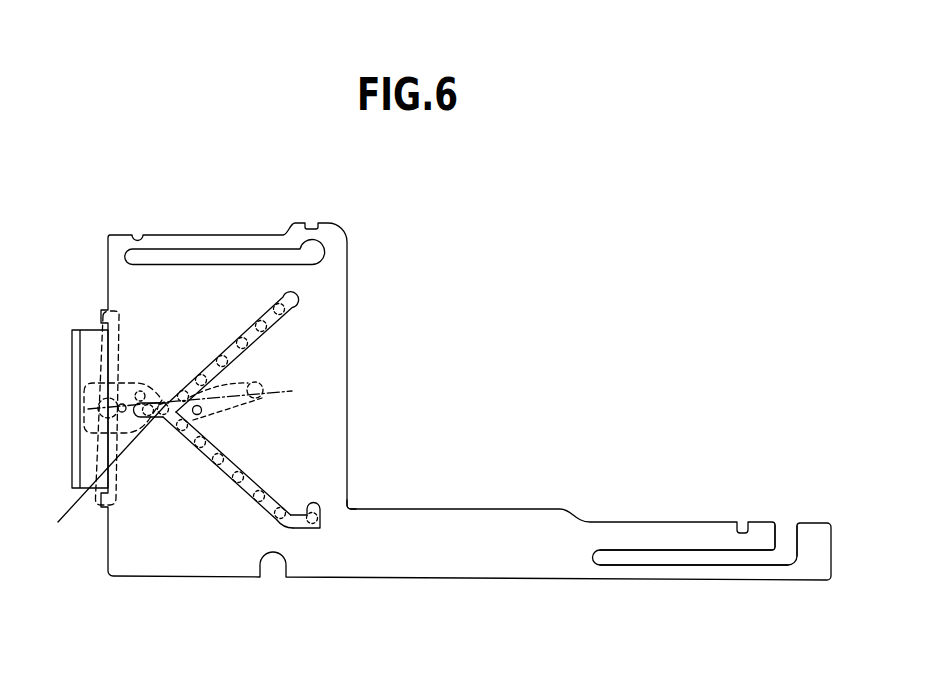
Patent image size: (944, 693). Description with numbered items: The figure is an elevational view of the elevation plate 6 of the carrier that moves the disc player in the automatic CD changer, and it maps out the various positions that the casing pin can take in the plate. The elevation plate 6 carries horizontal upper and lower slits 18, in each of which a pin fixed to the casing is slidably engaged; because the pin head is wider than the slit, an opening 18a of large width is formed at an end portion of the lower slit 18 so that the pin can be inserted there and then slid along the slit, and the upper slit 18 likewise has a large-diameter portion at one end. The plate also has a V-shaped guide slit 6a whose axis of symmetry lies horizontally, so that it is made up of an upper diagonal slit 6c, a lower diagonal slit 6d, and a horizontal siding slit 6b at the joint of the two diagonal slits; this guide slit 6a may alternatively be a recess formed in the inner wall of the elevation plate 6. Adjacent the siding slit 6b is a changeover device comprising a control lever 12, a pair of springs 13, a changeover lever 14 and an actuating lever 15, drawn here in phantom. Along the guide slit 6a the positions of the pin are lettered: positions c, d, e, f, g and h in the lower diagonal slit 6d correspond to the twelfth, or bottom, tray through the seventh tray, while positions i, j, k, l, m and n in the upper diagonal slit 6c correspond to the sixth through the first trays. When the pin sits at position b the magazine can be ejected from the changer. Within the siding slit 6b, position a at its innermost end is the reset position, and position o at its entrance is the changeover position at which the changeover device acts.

The elevation plate 6 is at (468, 560).
The V-shaped guide slit 6a is at (271, 522).
The horizontal siding slit 6b is at (104, 477).
The upper diagonal slit 6c is at (283, 300).
The lower diagonal slit 6d is at (301, 530).
The control lever 12 is at (97, 408).
The springs 13 is at (98, 352).
The changeover lever 14 is at (217, 422).
The actuating lever 15 is at (247, 386).
The slits 18 is at (217, 262).
The opening 18a is at (790, 516).
The reset position a is at (142, 392).
The ejection position b is at (347, 505).
The pin position c is at (285, 512).
The pin position d is at (262, 503).
The pin position e is at (236, 486).
The pin position f is at (215, 465).
The pin position g is at (196, 448).
The pin position h is at (178, 428).
The pin position i is at (187, 378).
The pin position j is at (200, 374).
The pin position k is at (218, 352).
The pin position l is at (240, 332).
The pin position m is at (263, 323).
The pin position n is at (283, 306).
The changeover position o is at (167, 397).